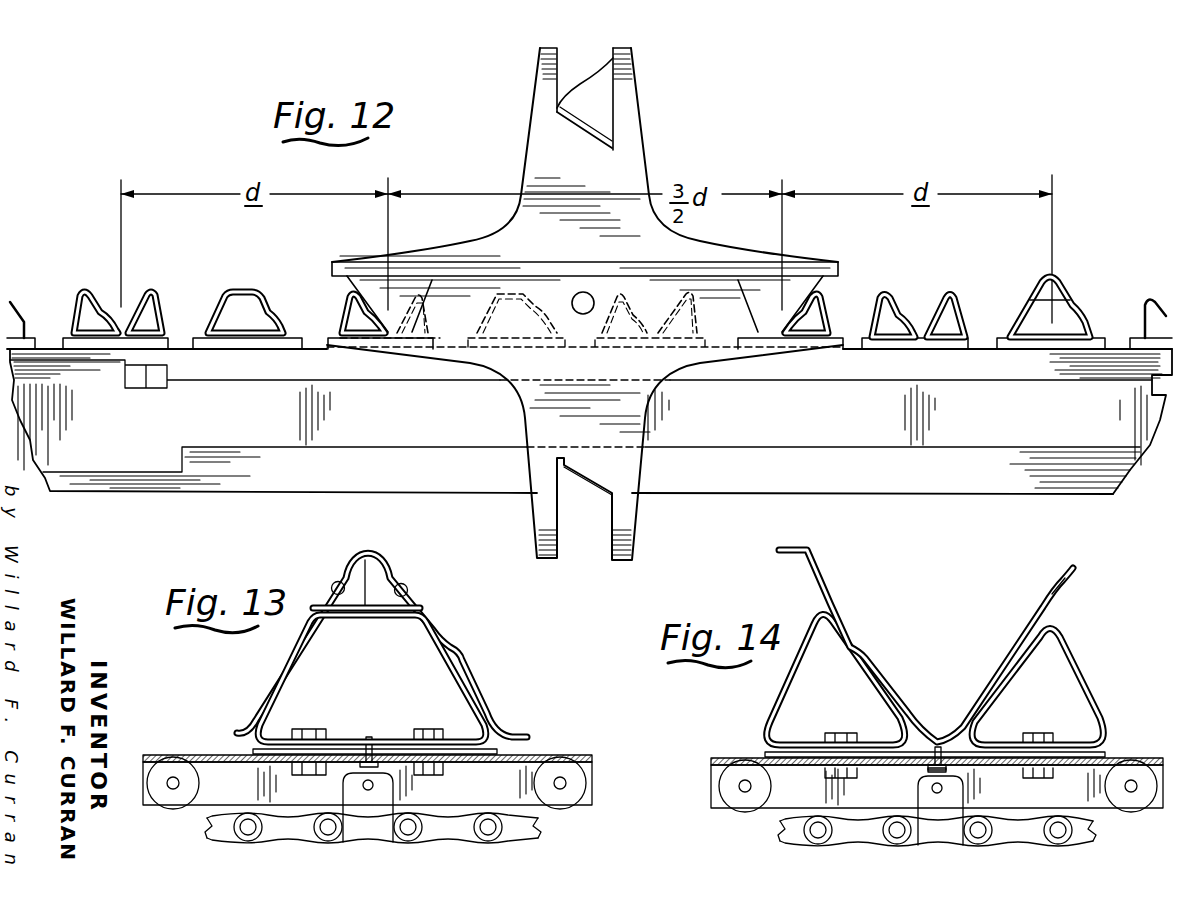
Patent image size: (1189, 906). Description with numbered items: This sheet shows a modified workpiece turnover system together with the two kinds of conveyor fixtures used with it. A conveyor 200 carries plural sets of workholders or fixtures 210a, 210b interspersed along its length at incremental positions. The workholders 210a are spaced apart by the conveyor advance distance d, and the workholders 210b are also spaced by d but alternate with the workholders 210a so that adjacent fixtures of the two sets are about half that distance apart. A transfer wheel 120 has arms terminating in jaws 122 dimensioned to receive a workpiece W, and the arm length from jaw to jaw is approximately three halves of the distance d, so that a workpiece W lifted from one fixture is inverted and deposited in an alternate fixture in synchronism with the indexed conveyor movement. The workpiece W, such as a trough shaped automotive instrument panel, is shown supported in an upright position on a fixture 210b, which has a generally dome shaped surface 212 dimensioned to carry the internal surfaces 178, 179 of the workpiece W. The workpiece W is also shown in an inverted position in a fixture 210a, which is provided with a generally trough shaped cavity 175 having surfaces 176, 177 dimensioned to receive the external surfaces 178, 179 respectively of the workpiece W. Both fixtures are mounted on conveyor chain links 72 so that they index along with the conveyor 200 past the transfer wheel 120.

In FIG. 12, the transfer wheel 120 is at (613, 178).
In FIG. 12, the jaw 122 is at (573, 78).
In FIG. 12, the conveyor 200 is at (238, 372).
In FIG. 12, the workholder (inverted-position fixture) 210a is at (152, 294).
In FIG. 14, the workholder (inverted-position fixture) 210a is at (965, 679).
In FIG. 12, the workholder (upright-position fixture) 210b is at (310, 266).
In FIG. 13, the workholder (upright-position fixture) 210b is at (343, 620).
In FIG. 13, the dome shaped surface 212 is at (365, 560).
In FIG. 13, the workpiece surface 178 is at (337, 581).
In FIG. 14, the workpiece surface 178 is at (1052, 607).
In FIG. 13, the workpiece surface 179 is at (407, 590).
In FIG. 14, the cavity surface 177 is at (862, 668).
In FIG. 14, the cavity surface 176 is at (1013, 663).
In FIG. 14, the trough shaped cavity 175 is at (966, 757).
In FIG. 13, the chain 72 is at (375, 845).
In FIG. 14, the chain 72 is at (937, 800).
In FIG. 13, the workpiece W is at (395, 568).
In FIG. 14, the workpiece W is at (832, 594).